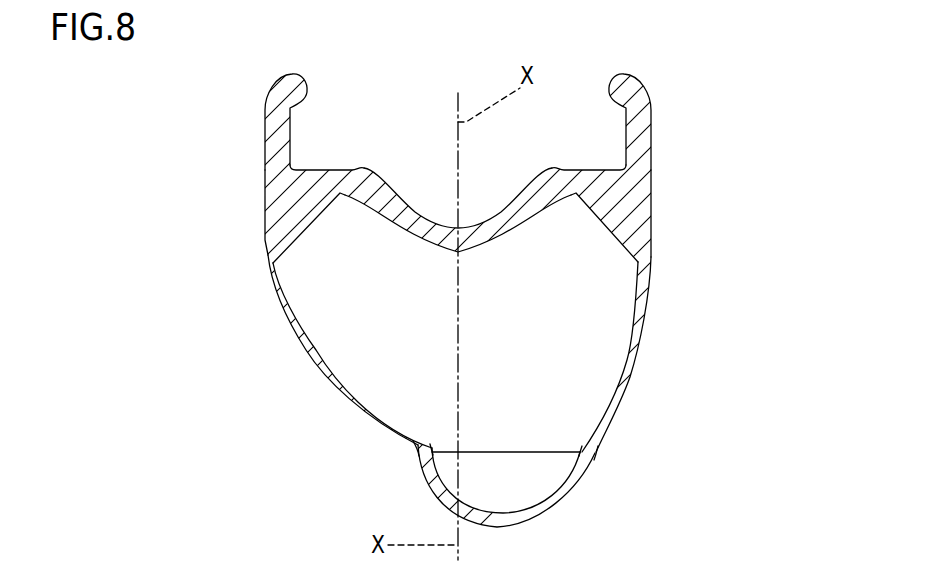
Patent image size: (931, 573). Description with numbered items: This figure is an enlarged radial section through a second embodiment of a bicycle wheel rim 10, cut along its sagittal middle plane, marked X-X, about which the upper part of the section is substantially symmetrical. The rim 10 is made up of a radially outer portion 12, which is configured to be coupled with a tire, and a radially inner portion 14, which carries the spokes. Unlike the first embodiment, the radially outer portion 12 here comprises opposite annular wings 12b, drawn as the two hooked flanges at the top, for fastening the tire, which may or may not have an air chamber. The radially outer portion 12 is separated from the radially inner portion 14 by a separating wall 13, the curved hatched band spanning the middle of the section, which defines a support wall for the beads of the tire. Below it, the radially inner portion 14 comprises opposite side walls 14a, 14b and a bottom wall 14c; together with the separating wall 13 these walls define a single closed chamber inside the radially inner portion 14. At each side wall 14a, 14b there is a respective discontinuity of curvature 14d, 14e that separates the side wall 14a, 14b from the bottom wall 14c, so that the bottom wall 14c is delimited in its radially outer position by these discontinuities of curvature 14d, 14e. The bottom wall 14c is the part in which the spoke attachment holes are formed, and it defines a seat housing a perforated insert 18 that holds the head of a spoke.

The bicycle wheel rim 10 is at (710, 322).
The radially outer portion 12 is at (682, 171).
The annular wings 12b is at (265, 115).
The separating wall 13 is at (412, 205).
The radially inner portion 14 is at (710, 250).
The side wall 14a is at (309, 357).
The side wall 14b is at (640, 342).
The bottom wall 14c is at (537, 525).
The discontinuity of curvature 14d is at (418, 453).
The discontinuity of curvature 14e is at (599, 453).
The perforated insert 18 is at (515, 480).